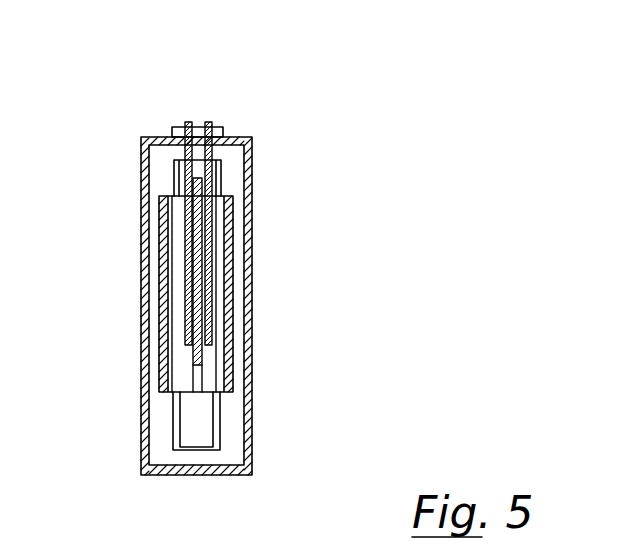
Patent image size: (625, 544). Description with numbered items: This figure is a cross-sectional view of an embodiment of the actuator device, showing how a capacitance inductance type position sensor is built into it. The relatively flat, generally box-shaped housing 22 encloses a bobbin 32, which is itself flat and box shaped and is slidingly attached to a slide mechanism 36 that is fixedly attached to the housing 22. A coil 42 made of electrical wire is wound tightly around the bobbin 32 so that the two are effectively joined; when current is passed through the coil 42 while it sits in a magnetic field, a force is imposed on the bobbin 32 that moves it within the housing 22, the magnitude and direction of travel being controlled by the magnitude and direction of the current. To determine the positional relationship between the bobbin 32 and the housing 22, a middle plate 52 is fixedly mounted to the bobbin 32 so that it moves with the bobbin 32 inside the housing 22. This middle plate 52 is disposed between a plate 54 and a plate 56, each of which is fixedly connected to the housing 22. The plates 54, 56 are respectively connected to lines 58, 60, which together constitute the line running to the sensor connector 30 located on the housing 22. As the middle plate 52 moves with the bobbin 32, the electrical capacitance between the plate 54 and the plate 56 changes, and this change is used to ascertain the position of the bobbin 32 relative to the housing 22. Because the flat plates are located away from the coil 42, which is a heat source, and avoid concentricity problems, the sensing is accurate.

The housing 22 is at (252, 156).
The sensor connector 30 is at (173, 127).
The bobbin 32 is at (215, 302).
The slide mechanism 36 is at (200, 425).
The coil 42 is at (236, 270).
The middle plate 52 is at (195, 381).
The plate 54 is at (222, 222).
The plate 56 is at (188, 177).
The line 58 is at (210, 97).
The line 60 is at (210, 122).